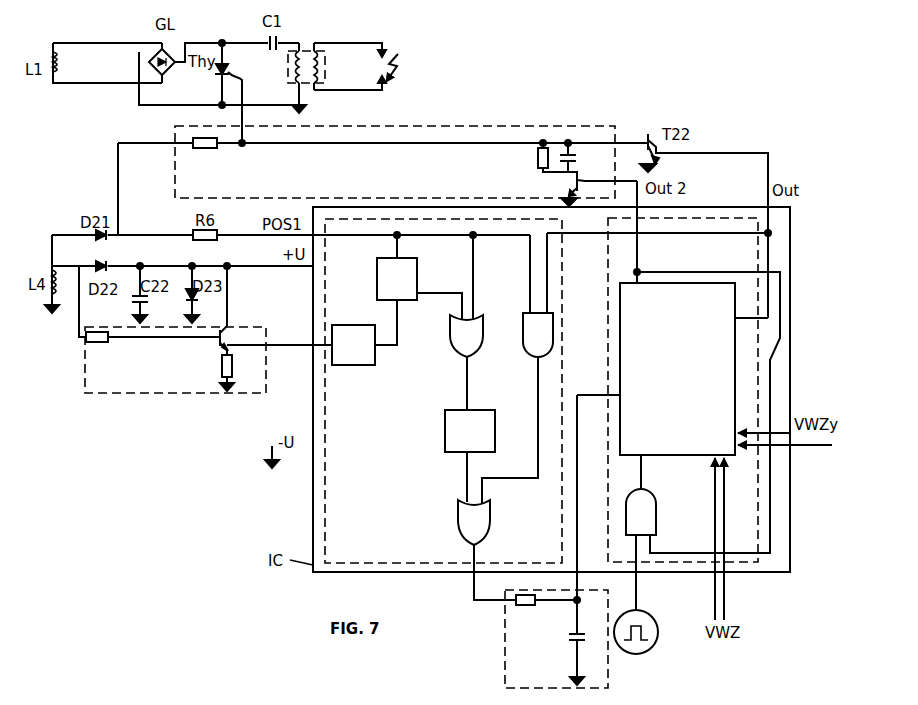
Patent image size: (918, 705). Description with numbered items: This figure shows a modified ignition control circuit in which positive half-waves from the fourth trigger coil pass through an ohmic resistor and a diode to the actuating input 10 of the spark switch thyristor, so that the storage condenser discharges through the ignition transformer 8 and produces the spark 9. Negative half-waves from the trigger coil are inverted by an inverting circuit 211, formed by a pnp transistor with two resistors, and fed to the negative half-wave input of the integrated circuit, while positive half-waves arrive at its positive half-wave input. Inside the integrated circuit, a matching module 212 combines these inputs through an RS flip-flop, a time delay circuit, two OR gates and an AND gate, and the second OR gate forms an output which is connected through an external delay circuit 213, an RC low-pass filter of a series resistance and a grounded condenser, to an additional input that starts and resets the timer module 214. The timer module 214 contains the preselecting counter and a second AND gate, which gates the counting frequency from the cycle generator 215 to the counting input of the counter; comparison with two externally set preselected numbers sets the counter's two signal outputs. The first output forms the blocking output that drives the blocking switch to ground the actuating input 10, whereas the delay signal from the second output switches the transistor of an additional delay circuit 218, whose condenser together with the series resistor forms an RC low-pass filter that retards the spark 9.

The transformer 8 is at (306, 51).
The spark 9 is at (396, 62).
The actuating input of the spark switch 10 is at (241, 98).
The inverting circuit 211 is at (126, 394).
The matching module 212 is at (420, 219).
The external delay circuit 213 is at (608, 680).
The timer module 214 is at (710, 218).
The cycle generator 215 is at (652, 648).
The additional delay circuit 218 is at (478, 126).